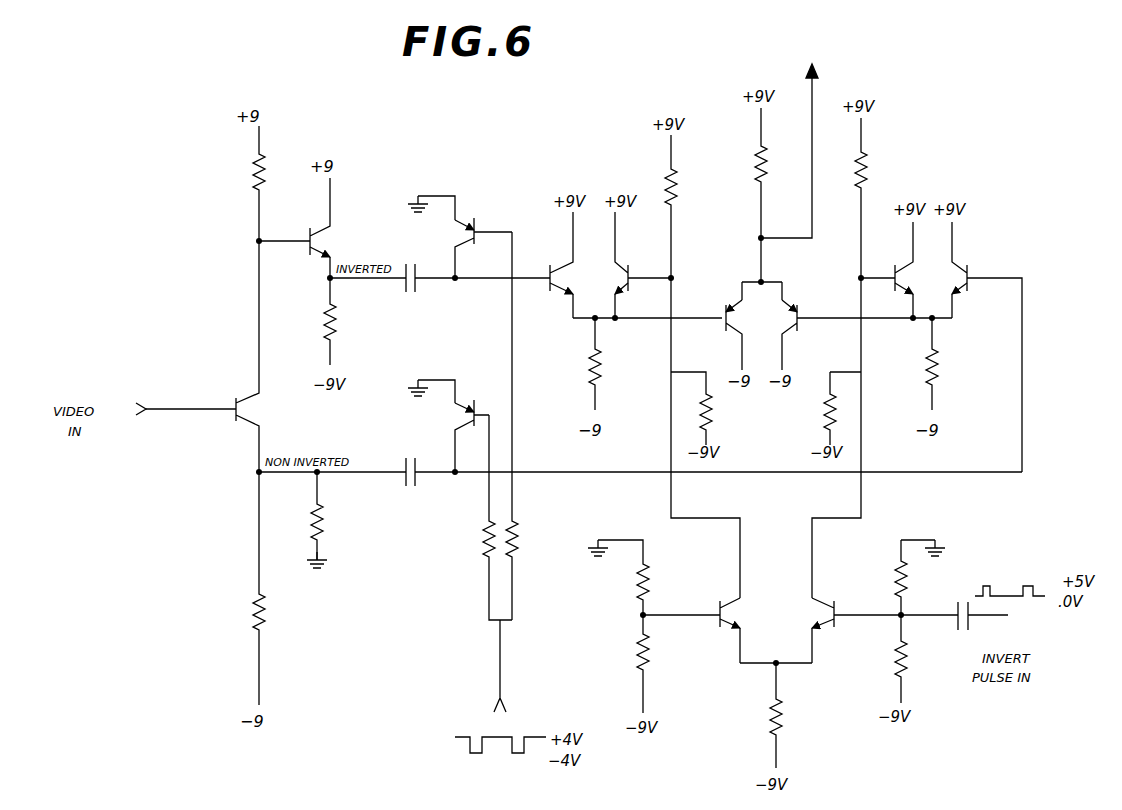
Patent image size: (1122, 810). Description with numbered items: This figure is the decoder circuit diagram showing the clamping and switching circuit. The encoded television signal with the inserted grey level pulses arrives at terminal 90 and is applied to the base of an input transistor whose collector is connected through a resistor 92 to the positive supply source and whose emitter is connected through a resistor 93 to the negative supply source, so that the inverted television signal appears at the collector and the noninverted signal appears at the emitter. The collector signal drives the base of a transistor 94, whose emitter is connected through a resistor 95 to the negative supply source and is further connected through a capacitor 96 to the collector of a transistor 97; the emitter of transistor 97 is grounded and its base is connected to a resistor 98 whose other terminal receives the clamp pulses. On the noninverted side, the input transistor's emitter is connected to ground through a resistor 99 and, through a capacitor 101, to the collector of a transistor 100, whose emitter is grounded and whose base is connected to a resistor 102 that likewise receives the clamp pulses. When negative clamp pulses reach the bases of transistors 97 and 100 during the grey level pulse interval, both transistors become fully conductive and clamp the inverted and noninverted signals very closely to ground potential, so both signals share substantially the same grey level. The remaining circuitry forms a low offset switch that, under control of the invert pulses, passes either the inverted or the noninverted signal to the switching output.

The terminal 90 is at (189, 382).
The resistor 92 is at (254, 181).
The resistor 93 is at (254, 617).
The transistor 94 is at (330, 203).
The resistor 95 is at (329, 329).
The capacitor 96 is at (415, 294).
The transistor 97 is at (478, 246).
The resistor 98 is at (519, 540).
The resistor 99 is at (316, 516).
The transistor 100 is at (508, 390).
The capacitor 101 is at (410, 488).
The resistor 102 is at (483, 547).